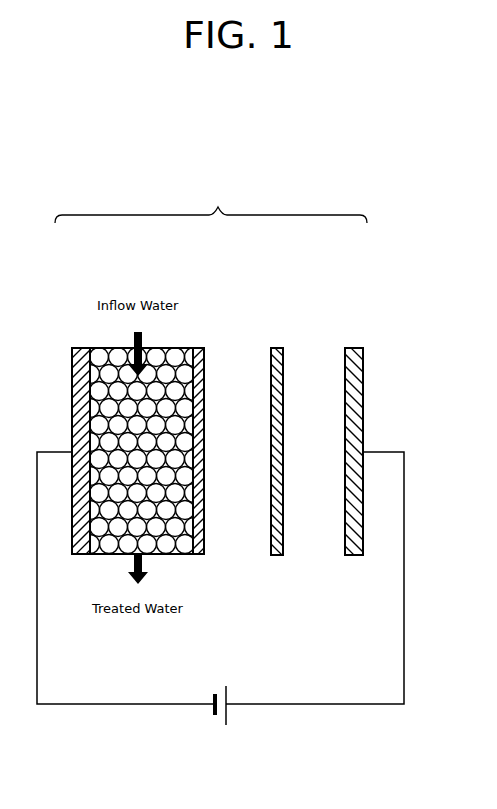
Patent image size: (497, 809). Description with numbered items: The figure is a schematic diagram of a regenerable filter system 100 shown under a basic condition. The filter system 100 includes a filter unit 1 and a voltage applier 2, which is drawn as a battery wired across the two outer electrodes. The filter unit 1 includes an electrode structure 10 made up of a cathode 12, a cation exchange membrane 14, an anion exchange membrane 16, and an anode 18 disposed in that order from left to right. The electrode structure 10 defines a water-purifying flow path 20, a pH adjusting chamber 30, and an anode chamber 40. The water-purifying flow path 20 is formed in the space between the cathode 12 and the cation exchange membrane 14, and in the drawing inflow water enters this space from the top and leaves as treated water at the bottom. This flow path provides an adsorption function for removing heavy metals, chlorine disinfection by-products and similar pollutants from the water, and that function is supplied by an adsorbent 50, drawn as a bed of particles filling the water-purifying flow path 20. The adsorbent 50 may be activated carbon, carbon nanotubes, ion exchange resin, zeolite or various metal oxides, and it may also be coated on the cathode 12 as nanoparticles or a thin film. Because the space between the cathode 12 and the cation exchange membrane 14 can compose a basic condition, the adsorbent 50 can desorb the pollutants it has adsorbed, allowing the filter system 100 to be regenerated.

The filter system 100 is at (253, 136).
The electrode structure 10 is at (211, 197).
The cathode 12 is at (83, 348).
The cation exchange membrane 14 is at (200, 348).
The anion exchange membrane 16 is at (277, 348).
The anode 18 is at (353, 348).
The adsorbent 50 is at (110, 527).
The water-purifying flow path 20 is at (183, 557).
The pH adjusting chamber 30 is at (237, 557).
The anode chamber 40 is at (319, 557).
The filter unit 1 is at (367, 404).
The voltage applier 2 is at (227, 718).